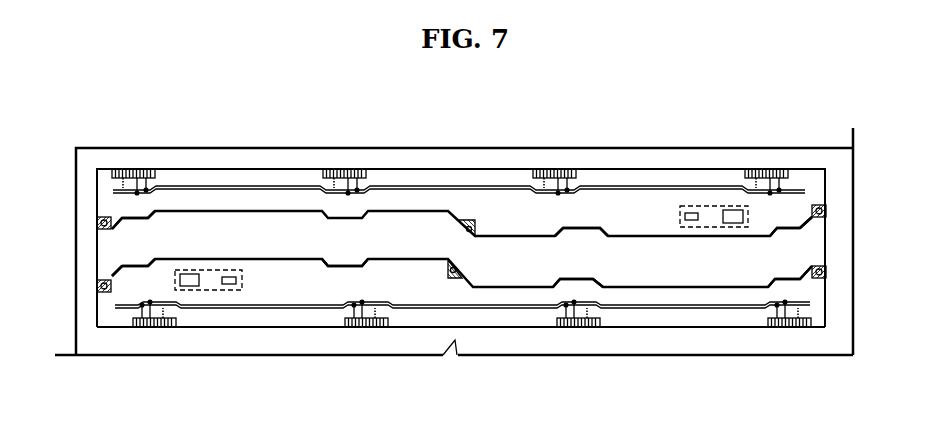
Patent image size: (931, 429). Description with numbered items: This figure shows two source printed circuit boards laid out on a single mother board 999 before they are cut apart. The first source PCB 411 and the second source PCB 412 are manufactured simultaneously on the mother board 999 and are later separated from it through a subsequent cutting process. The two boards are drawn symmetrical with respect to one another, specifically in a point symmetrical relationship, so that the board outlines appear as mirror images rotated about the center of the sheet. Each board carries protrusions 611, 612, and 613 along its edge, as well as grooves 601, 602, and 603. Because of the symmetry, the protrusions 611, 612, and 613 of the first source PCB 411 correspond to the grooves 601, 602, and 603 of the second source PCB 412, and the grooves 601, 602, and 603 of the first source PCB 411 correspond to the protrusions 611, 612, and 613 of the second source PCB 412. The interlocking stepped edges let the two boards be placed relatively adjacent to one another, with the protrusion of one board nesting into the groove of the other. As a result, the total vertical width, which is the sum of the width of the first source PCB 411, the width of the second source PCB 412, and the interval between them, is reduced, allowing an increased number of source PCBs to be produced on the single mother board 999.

The mother board 999 is at (500, 148).
The first source PCB 411 is at (254, 328).
The second source PCB 412 is at (405, 169).
The groove 601 is at (575, 236).
The groove 602 is at (137, 256).
The groove 603 is at (112, 273).
The protrusion 611 is at (340, 212).
The protrusion 612 is at (137, 213).
The protrusion 613 is at (112, 231).